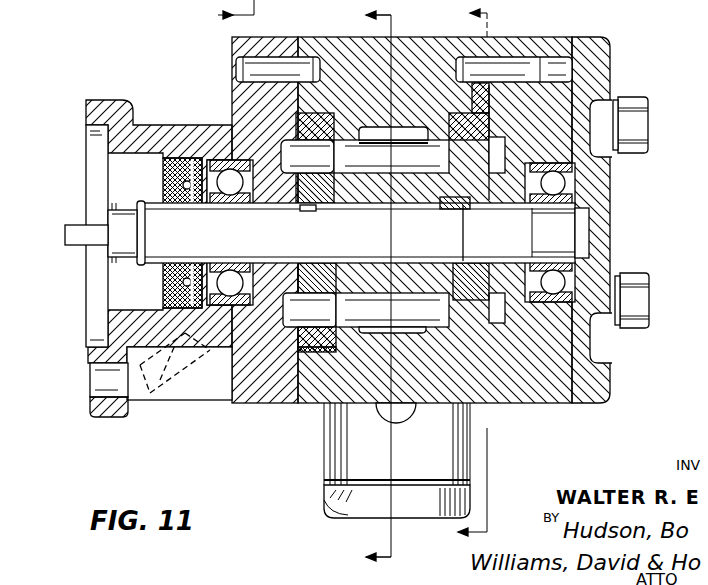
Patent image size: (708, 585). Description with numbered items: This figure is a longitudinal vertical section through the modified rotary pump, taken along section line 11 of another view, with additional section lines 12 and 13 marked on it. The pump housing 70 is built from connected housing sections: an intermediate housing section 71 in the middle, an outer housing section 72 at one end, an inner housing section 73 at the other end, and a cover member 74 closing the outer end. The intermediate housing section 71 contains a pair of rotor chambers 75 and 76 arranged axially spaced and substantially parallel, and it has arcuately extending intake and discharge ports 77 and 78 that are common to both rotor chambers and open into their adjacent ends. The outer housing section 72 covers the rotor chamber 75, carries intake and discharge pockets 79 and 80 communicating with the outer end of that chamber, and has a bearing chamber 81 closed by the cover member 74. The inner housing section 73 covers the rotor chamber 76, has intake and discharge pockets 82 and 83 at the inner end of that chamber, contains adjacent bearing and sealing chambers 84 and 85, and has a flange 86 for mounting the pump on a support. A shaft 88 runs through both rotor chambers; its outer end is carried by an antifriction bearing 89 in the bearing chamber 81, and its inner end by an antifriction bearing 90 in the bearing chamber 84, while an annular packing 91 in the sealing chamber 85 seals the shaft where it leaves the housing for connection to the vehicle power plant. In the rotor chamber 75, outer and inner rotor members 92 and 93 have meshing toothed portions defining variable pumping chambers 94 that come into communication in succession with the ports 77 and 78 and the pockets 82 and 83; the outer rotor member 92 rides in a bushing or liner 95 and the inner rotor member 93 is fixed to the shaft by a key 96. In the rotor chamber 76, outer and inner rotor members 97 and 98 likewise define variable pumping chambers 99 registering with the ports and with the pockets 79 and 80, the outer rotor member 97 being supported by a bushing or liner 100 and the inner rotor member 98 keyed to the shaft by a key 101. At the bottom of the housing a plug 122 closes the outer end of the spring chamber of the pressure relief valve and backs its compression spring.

The section line 11— 11 is at (222, 14).
The section line 12- 12 is at (362, 288).
The section line 13- 13 is at (451, 278).
The pump housing 70 is at (401, 227).
The intermediate housing section 71 is at (400, 48).
The outer housing section 72 is at (517, 42).
The inner housing section 73 is at (268, 45).
The cover member 74 is at (605, 60).
The rotor chamber 75 is at (462, 110).
The rotor chamber 76 is at (318, 113).
The intake port 77 is at (409, 317).
The discharge port 78 is at (398, 137).
The intake pocket 79 is at (515, 315).
The discharge pocket 80 is at (495, 153).
The bearing chamber 81 is at (567, 290).
The intake pocket 82 is at (291, 313).
The discharge pocket 83 is at (272, 160).
The bearing chamber 84 is at (222, 160).
The sealing chamber 85 is at (178, 160).
The flange 86 is at (97, 418).
The shaft 88 is at (373, 267).
The antifriction bearing 89 is at (555, 183).
The antifriction bearing 90 is at (228, 305).
The annular packing 91 is at (167, 185).
The outer rotor member 92 is at (498, 117).
The inner rotor member 93 is at (475, 253).
The pumping chambers 94 is at (466, 263).
The bushing or liner 95 is at (455, 343).
The key 96 is at (445, 205).
The outer rotor member 97 is at (334, 130).
The inner rotor member 98 is at (320, 172).
The pumping chambers 99 is at (314, 300).
The bushing or liner 100 is at (318, 352).
The key 101 is at (308, 213).
The plug 122 is at (336, 512).